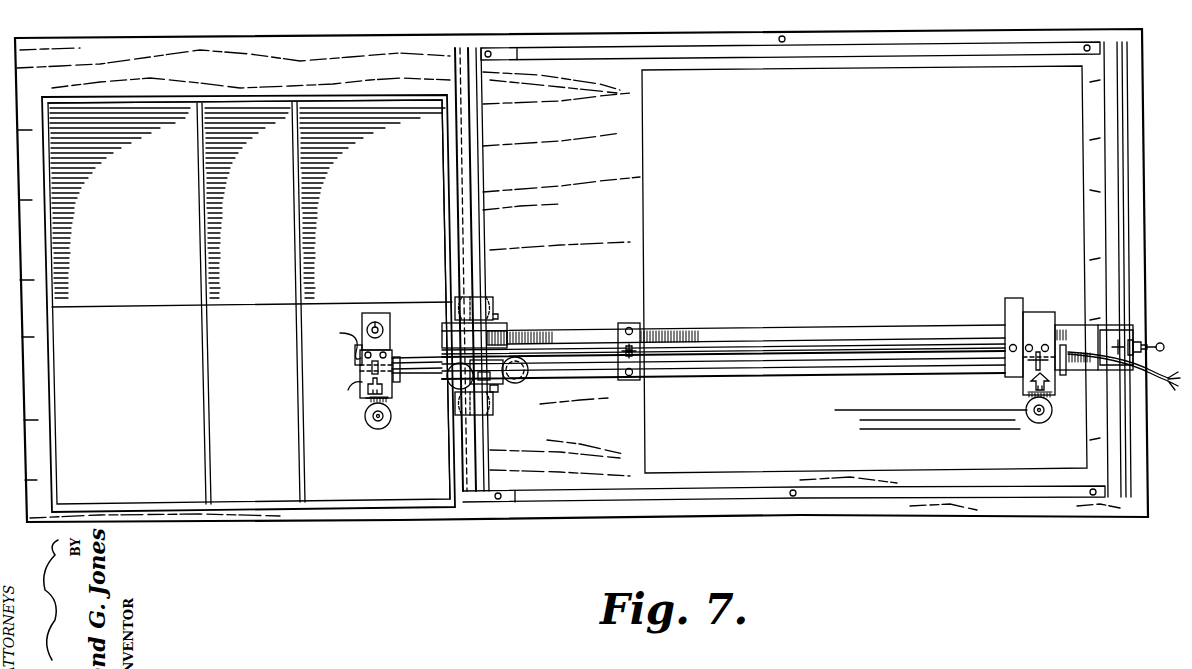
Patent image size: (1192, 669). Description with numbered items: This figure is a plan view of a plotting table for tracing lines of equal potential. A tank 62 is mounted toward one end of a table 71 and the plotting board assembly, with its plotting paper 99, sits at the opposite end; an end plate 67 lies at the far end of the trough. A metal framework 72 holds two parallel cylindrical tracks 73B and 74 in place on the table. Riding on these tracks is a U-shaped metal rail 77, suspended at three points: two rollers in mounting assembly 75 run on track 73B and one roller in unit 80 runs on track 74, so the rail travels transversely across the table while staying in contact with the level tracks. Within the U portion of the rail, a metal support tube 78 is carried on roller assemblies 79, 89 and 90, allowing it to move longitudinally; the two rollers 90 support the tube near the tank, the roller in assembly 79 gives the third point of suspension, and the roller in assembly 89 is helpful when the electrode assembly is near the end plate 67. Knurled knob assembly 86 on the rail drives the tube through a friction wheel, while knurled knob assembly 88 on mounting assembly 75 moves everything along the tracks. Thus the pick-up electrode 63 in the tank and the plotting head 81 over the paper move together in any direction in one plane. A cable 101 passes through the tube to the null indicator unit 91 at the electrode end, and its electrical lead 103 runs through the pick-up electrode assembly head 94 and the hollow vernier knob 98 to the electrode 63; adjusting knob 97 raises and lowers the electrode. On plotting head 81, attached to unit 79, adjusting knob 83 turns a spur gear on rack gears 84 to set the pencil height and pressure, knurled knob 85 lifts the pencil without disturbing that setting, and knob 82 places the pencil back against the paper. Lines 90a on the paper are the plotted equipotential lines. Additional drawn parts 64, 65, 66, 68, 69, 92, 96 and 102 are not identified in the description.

The tank 62 is at (140, 398).
The pick-up electrode 63 is at (378, 423).
The panel frame 64 is at (279, 508).
The frame top member 65 is at (149, 110).
The frame side member 66 is at (447, 148).
The end plate 67 is at (55, 350).
The divider 68 is at (198, 330).
The divider 69 is at (293, 326).
The table 71 is at (895, 12).
The metal framework 72 is at (745, 47).
The track 73B is at (478, 130).
The track 74 is at (1105, 104).
The mounting assembly 75 is at (482, 297).
The U-shaped metal rail 77 is at (712, 330).
The metal support tube 78 is at (808, 333).
The roller assembly 79 is at (1046, 299).
The unit 80 is at (1145, 342).
The plotting head 81 is at (1030, 395).
The adjusting knob 82 is at (1035, 425).
The adjusting knob 83 is at (1060, 345).
The rack gears 84 is at (1020, 378).
The knurled knob 85 is at (1043, 418).
The knurled knob assembly 86 is at (522, 380).
The knurled knob assembly 88 is at (452, 385).
The roller assembly 89 is at (621, 384).
The roller assembly 90 is at (500, 345).
The lines of equipotential 90a is at (873, 411).
The null indicator unit 91 is at (376, 313).
The pivot 92 is at (388, 326).
The pick-up electrode assembly head 94 is at (368, 405).
The slide plate 96 is at (390, 402).
The adjusting knob 97 is at (400, 380).
The adjusting knob 98 is at (368, 425).
The plotting paper 99 is at (852, 195).
The cable 101 is at (1092, 360).
The spring 102 is at (341, 333).
The electrical lead 103 is at (349, 391).